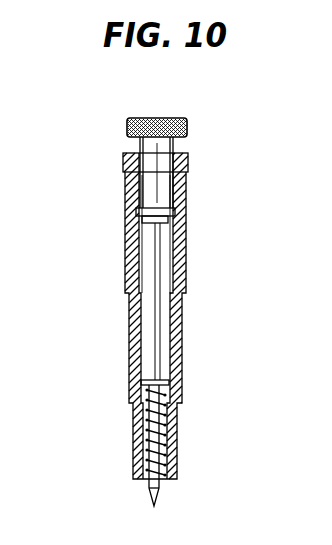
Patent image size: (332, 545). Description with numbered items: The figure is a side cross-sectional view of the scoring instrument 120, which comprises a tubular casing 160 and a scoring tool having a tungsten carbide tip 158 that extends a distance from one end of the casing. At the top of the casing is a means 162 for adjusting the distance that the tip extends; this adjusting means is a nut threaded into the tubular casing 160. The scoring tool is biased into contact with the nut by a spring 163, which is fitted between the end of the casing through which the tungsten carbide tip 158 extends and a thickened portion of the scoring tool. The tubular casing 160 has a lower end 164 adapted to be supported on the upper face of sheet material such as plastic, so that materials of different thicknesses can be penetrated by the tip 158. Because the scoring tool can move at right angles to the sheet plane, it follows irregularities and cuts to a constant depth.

The scoring instrument 120 is at (144, 290).
The means for adjusting the distance 162 is at (187, 126).
The tubular casing 160 is at (125, 283).
The spring 163 is at (135, 403).
The lower end 164 is at (134, 484).
The tungsten carbide tip 158 is at (157, 489).